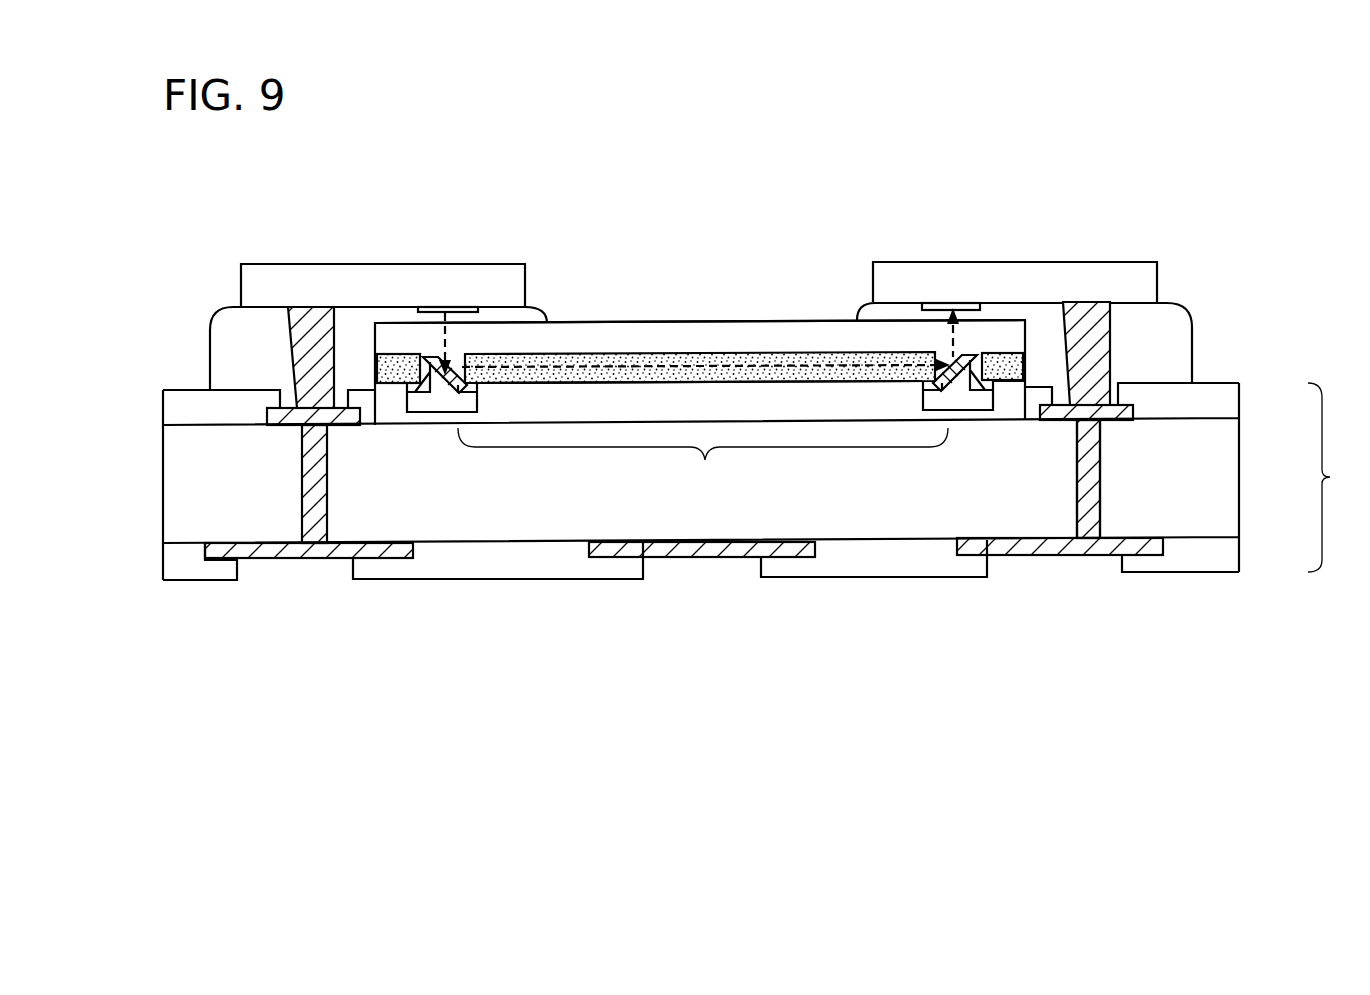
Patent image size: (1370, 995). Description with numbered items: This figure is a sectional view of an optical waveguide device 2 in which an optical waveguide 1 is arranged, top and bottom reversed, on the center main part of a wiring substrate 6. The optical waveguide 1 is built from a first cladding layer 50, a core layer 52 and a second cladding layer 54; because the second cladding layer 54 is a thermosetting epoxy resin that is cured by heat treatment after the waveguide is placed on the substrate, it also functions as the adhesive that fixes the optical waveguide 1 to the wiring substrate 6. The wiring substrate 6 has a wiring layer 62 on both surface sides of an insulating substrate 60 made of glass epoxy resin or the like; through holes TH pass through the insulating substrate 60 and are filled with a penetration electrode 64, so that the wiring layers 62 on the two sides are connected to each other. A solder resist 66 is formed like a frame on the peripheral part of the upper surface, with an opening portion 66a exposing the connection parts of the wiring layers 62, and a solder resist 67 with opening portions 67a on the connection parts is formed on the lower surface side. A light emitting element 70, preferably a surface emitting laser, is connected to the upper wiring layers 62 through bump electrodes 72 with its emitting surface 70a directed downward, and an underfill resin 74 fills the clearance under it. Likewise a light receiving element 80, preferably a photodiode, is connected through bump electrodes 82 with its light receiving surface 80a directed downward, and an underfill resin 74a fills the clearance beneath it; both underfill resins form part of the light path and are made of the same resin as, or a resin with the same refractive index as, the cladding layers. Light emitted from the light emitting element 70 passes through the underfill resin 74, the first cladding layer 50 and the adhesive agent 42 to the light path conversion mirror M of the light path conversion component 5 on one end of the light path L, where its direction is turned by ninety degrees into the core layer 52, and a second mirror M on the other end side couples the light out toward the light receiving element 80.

The optical waveguide 1 is at (588, 310).
The optical waveguide device 2 is at (662, 152).
The light path conversion component 5 is at (432, 413).
The wiring substrate 6 is at (1357, 490).
The adhesive agent 42 is at (453, 377).
The first cladding layer 50 is at (635, 335).
The core layer 52 is at (662, 355).
The second cladding layer 54 is at (685, 398).
The insulating substrate 60 is at (1227, 477).
The wiring layer 62 is at (275, 420).
The penetration electrode 64 is at (1090, 497).
The solder resist 66 is at (1210, 400).
The opening portion 66a is at (1120, 397).
The solder resist 67 is at (1213, 563).
The opening portion 67a is at (1122, 563).
The light emitting element 70 is at (367, 277).
The emitting surface 70a is at (449, 307).
The bump electrode 72 is at (302, 345).
The underfill resin 74 is at (228, 333).
The underfill resin 74a is at (1158, 322).
The light receiving element 80 is at (985, 275).
The light receiving surface 80a is at (950, 304).
The bump electrode 82 is at (1077, 332).
The light path L is at (703, 460).
The light path conversion mirror M is at (449, 342).
The through hole TH is at (1075, 467).